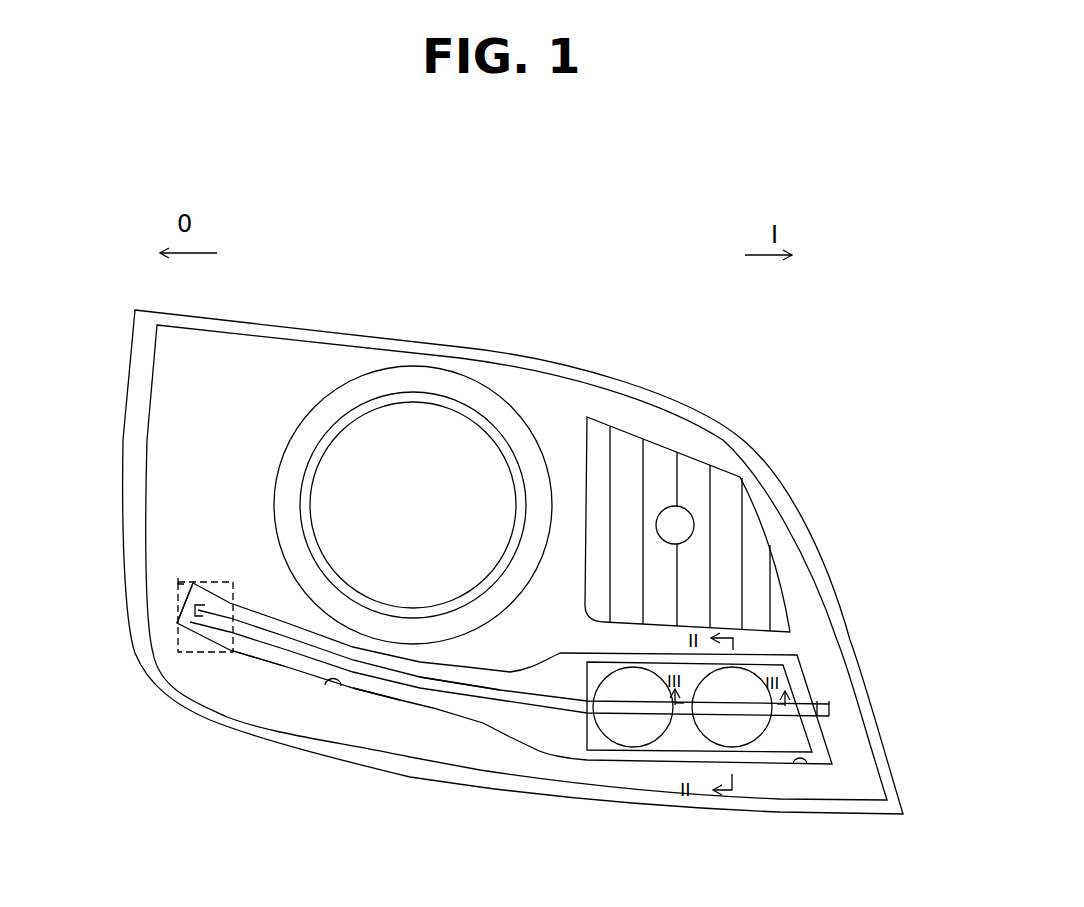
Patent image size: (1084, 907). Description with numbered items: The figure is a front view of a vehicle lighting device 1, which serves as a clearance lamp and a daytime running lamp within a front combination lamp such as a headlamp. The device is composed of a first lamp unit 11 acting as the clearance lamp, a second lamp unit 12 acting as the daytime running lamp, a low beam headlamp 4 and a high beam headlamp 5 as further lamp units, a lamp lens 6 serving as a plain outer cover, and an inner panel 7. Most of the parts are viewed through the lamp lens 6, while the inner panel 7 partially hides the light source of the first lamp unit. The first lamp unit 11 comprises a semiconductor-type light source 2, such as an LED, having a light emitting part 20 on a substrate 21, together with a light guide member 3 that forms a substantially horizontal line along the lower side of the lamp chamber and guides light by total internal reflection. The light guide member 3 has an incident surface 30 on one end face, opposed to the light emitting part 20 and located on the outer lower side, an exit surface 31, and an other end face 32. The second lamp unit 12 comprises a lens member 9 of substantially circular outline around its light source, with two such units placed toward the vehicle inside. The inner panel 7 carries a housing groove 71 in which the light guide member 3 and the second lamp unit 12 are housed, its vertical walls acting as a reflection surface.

The vehicle lighting device 1 is at (571, 327).
The semiconductor-type light source 2 is at (219, 573).
The light guide member 3 is at (393, 694).
The low beam headlamp 4 is at (428, 366).
The high beam headlamp 5 is at (665, 443).
The lamp lens 6 is at (238, 320).
The inner panel 7 is at (295, 337).
The lens member 9 is at (611, 742).
The first lamp unit 11 is at (237, 660).
The second lamp unit 12 is at (669, 741).
The light emitting part 20 is at (193, 603).
The substrate 21 is at (178, 580).
The incident surface 30 is at (177, 623).
The exit surface 31 is at (425, 678).
The other end face 32 is at (831, 707).
The housing groove 71 is at (341, 687).